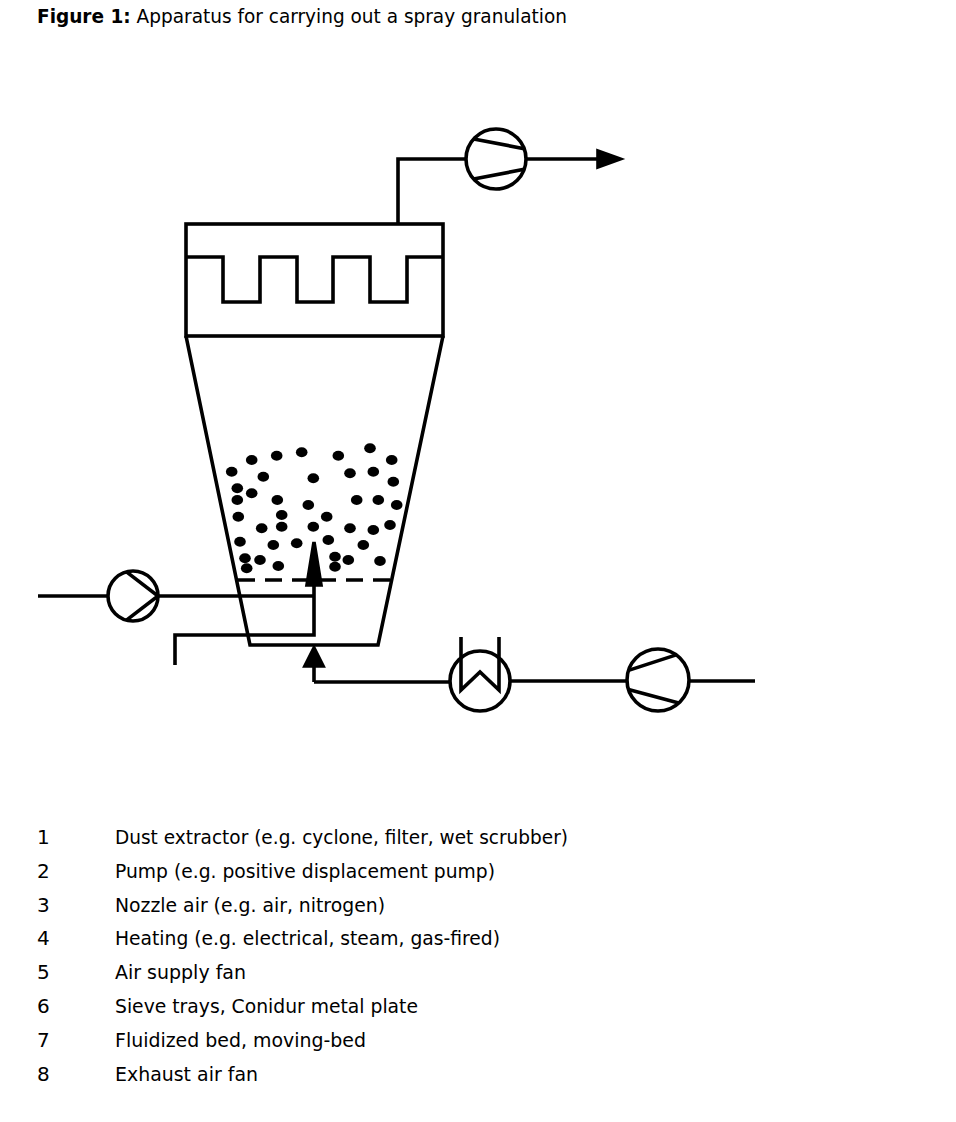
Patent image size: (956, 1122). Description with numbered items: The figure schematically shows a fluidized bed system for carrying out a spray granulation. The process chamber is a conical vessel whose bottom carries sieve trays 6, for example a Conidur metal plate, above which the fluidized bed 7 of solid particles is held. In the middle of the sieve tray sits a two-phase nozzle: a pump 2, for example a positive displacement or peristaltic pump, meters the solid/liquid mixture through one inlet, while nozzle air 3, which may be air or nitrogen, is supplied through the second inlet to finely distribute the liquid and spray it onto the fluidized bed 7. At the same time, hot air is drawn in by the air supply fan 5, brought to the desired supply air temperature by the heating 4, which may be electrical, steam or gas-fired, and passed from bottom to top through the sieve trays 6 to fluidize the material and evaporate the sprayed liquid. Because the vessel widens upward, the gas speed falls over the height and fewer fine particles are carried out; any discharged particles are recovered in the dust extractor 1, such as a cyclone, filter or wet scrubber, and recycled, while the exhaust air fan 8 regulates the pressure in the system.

The dust extractor 1 is at (295, 280).
The pump 2 is at (176, 583).
The nozzle air 3 is at (242, 626).
The heating 4 is at (407, 696).
The air supply fan 5 is at (632, 702).
The sieve trays 6 is at (338, 576).
The fluidized bed 7 is at (323, 490).
The exhaust air fan 8 is at (509, 187).